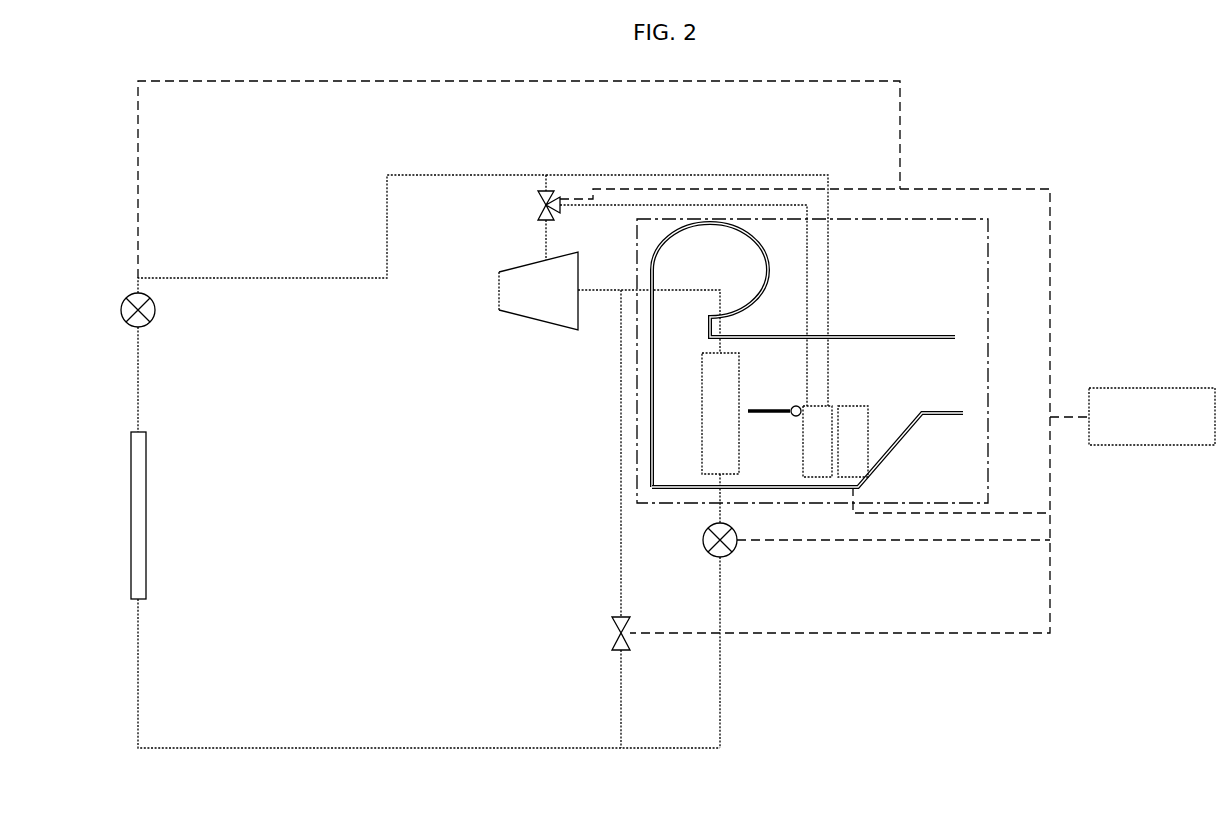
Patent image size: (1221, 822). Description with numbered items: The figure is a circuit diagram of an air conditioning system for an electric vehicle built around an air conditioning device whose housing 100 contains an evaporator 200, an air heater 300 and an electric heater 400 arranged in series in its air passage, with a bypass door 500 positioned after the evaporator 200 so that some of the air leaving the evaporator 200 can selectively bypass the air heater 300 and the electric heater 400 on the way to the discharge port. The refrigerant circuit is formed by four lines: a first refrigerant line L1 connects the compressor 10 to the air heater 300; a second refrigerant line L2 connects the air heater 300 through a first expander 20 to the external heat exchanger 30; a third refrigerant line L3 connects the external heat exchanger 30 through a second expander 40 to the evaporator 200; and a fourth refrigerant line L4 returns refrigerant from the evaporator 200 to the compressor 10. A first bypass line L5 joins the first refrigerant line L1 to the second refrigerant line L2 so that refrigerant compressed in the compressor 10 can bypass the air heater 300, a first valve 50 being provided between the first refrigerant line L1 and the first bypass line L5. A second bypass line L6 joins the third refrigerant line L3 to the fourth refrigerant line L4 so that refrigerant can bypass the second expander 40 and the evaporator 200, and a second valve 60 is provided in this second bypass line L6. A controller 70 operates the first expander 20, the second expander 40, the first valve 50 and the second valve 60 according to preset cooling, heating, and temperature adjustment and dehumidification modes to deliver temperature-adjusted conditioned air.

The compressor 10 is at (538, 321).
The first expander 20 is at (155, 310).
The external heat exchanger 30 is at (146, 520).
The second expander 40 is at (733, 553).
The first valve 50 is at (540, 212).
The second valve 60 is at (612, 640).
The controller 70 is at (1152, 388).
The housing 100 is at (988, 248).
The evaporator 200 is at (702, 425).
The air heater 300 is at (818, 478).
The electric heater 400 is at (868, 410).
The bypass door 500 is at (760, 408).
The first refrigerant line L1 is at (762, 176).
The second refrigerant line L2 is at (426, 175).
The third refrigerant line L3 is at (375, 748).
The fourth refrigerant line L4 is at (692, 290).
The first bypass line L5 is at (546, 185).
The second bypass line L6 is at (618, 565).